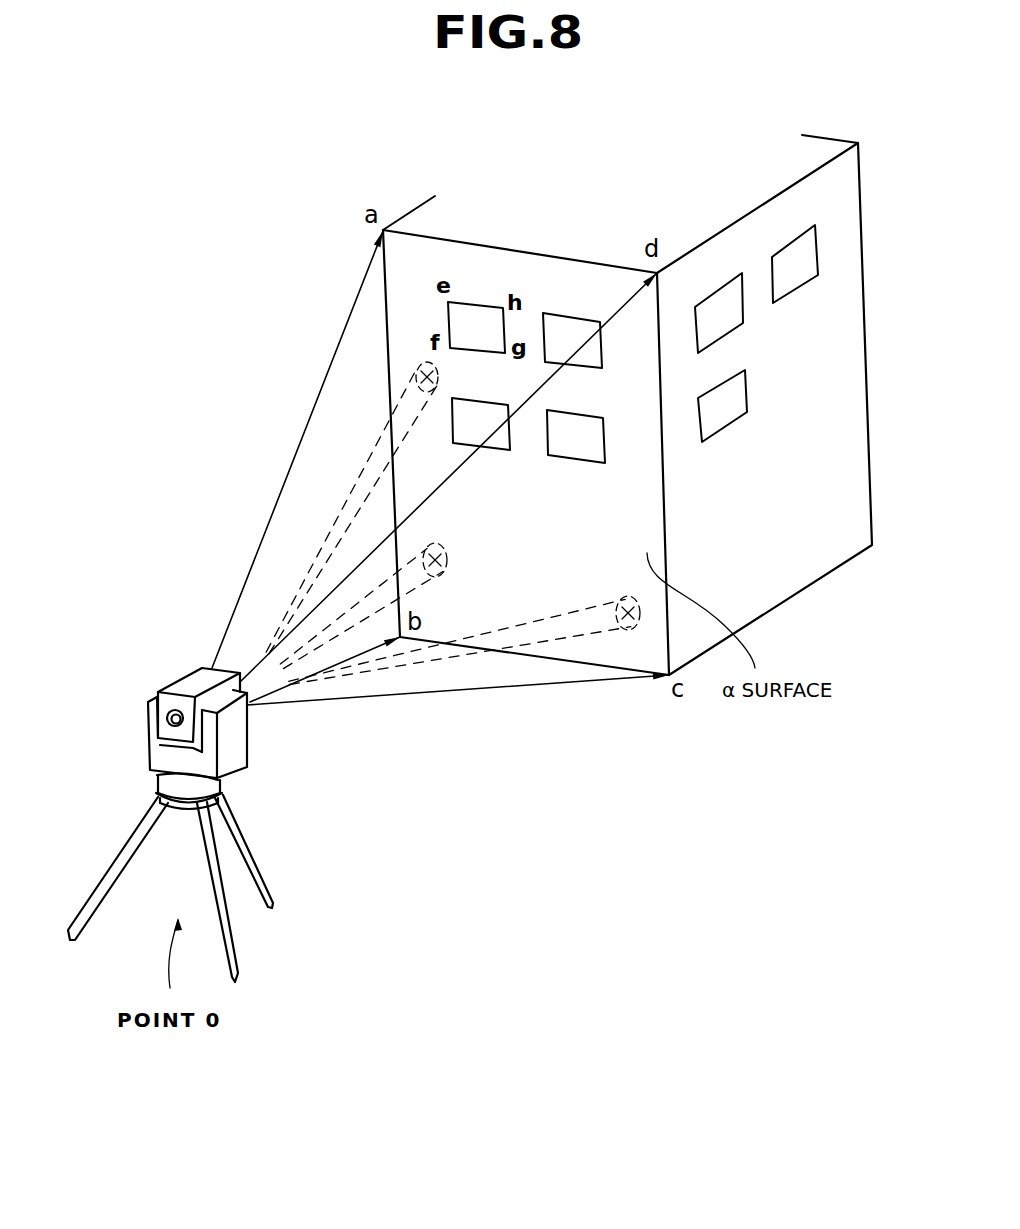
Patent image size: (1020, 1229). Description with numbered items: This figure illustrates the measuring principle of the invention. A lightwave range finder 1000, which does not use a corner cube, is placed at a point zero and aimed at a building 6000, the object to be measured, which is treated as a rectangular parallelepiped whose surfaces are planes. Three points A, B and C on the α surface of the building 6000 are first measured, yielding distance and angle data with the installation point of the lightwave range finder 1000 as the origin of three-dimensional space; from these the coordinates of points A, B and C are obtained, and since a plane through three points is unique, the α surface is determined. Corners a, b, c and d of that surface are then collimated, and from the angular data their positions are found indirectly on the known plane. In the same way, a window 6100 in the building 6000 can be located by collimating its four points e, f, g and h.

The lightwave range finder 1000 is at (237, 732).
The building 6000 is at (835, 545).
The window 6100 is at (480, 320).
The point A is at (440, 548).
The point B is at (623, 600).
The point C is at (418, 362).